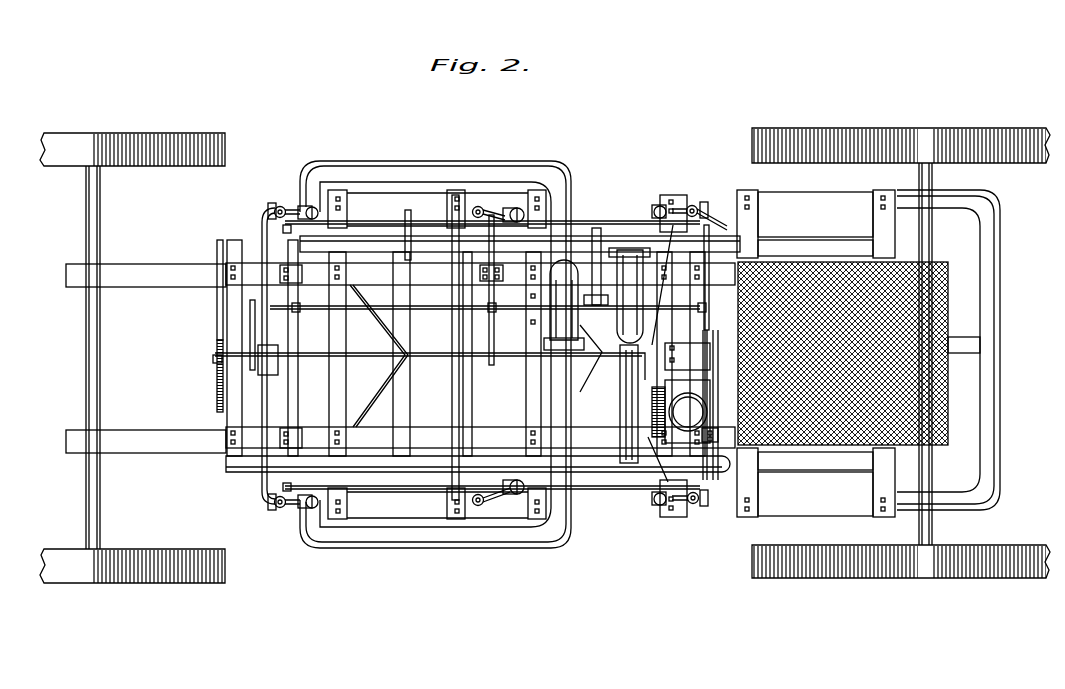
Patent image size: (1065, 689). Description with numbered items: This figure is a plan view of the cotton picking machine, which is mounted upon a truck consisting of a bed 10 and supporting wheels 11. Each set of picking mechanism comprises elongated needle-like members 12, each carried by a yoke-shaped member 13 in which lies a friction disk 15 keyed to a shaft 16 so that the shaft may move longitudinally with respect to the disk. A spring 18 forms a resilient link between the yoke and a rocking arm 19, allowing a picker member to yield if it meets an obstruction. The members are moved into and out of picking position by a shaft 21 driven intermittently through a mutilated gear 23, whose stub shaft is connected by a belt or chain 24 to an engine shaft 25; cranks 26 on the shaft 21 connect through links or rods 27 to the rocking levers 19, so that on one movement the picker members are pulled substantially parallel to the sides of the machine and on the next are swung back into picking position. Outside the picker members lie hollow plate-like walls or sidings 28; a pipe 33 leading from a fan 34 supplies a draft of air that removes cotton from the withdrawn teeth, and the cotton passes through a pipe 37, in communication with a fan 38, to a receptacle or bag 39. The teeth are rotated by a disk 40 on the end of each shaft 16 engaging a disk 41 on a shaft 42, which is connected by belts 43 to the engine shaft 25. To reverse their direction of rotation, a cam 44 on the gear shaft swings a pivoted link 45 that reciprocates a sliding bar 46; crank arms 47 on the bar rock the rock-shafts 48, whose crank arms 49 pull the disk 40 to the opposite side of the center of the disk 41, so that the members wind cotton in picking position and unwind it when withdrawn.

The bed 10 is at (152, 268).
The supporting wheels 11 is at (172, 168).
The needle-like member 12 is at (590, 393).
The yoke-shaped member 13 is at (300, 511).
The friction disk 15 is at (716, 520).
The shaft 16 is at (730, 215).
The spring 18 is at (290, 205).
The rocking arm 19 is at (279, 207).
The shaft 21 is at (385, 360).
The mutilated gear 23 is at (250, 381).
The belt or chain 24 is at (222, 314).
The engine shaft 25 is at (361, 262).
The cranks 26 is at (253, 346).
The link or rod 27 is at (262, 232).
The walls or sidings 28 is at (417, 190).
The pipe 33 is at (615, 240).
The fan 34 is at (628, 272).
The pipe 37 is at (372, 168).
The fan 38 is at (570, 278).
The receptacle or bag 39 is at (950, 292).
The disk 40 is at (510, 208).
The disk 41 is at (535, 206).
The shaft 42 is at (418, 222).
The belts 43 is at (530, 205).
The cam 44 is at (285, 374).
The pivoted link 45 is at (296, 328).
The sliding bar 46 is at (385, 312).
The crank arms 47 is at (297, 310).
The rock-shafts 48 is at (300, 396).
The crank arms 49 is at (290, 232).